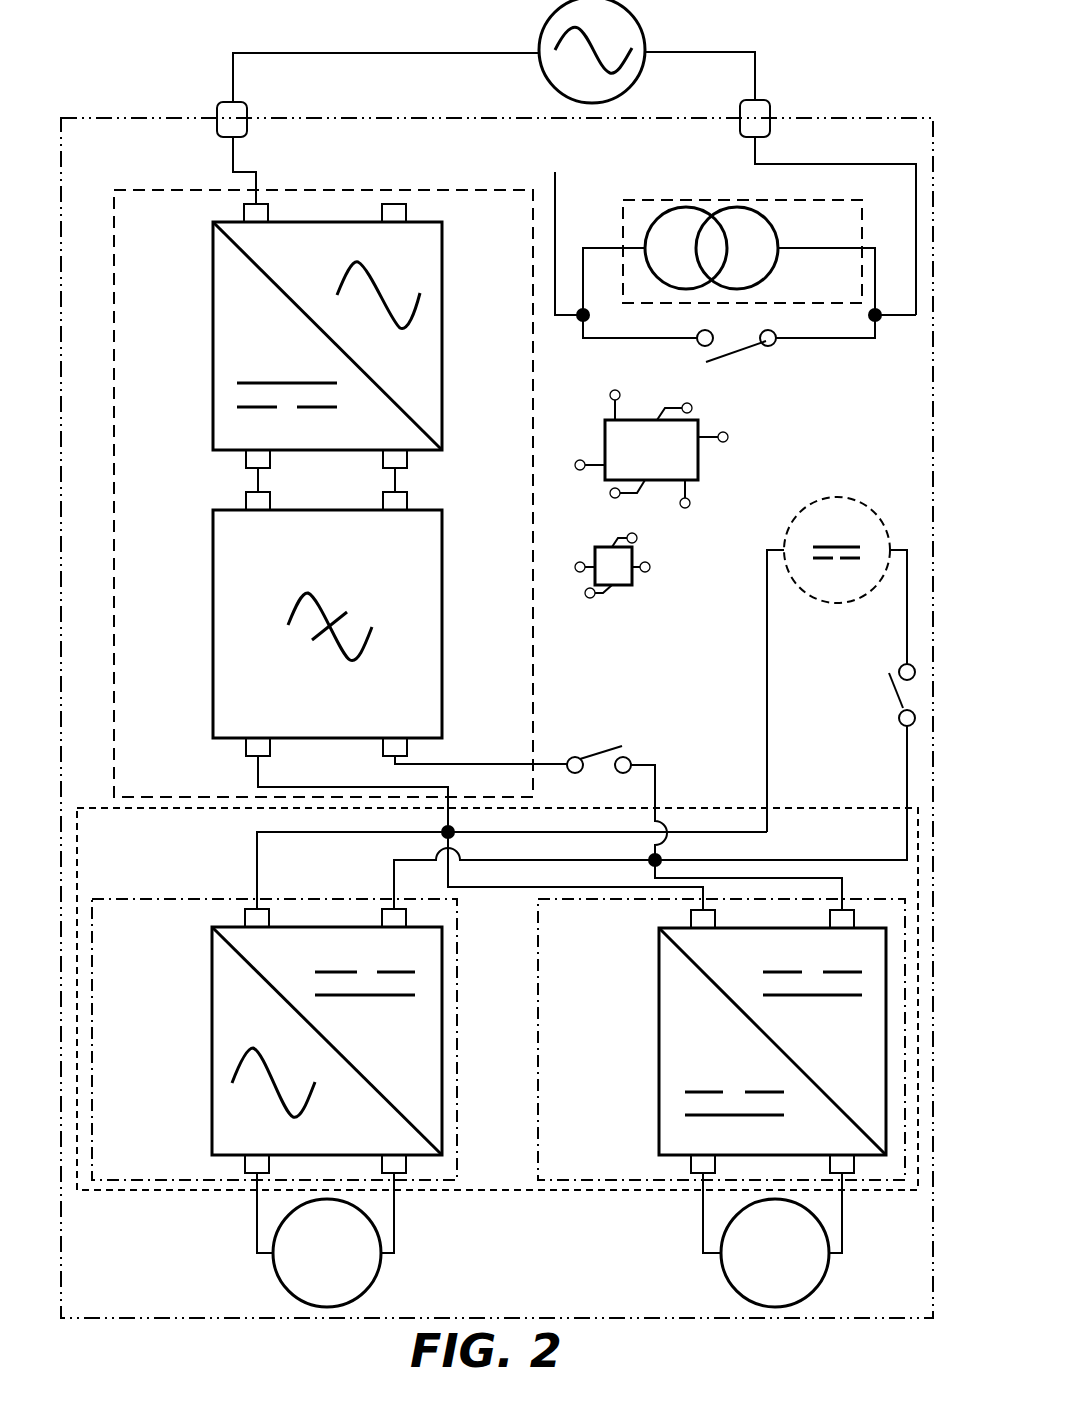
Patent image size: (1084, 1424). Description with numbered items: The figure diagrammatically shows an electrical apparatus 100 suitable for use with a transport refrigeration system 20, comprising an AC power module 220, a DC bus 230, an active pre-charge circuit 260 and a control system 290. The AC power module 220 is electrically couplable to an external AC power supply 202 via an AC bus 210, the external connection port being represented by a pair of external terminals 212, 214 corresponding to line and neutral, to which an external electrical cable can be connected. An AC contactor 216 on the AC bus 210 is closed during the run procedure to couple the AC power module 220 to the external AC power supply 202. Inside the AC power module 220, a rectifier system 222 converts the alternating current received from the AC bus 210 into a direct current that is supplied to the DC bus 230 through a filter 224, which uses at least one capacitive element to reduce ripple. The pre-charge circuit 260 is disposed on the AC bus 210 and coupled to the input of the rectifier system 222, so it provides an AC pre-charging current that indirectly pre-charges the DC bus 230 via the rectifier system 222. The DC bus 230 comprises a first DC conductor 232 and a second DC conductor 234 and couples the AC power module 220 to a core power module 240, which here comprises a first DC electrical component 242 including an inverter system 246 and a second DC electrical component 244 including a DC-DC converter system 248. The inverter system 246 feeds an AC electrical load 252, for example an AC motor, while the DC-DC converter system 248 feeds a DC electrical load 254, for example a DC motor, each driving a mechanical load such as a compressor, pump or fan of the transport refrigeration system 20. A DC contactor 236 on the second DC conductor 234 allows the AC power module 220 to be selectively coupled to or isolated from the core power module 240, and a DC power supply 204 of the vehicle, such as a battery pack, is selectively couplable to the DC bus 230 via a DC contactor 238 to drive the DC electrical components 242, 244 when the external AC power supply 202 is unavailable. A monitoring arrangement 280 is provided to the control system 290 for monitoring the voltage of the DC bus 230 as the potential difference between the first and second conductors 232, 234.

The transport refrigeration system 20 is at (877, 93).
The electrical apparatus 100 is at (116, 164).
The external AC power supply 202 is at (655, 0).
The DC power supply 204 is at (873, 503).
The AC bus 210 is at (271, 157).
The external terminal 212 is at (230, 112).
The external terminal 214 is at (770, 110).
The AC contactor 216 is at (735, 358).
The AC power module 220 is at (178, 231).
The rectifier system 222 is at (442, 327).
The filter 224 is at (213, 602).
The DC bus 230 is at (677, 729).
The first DC conductor 232 is at (260, 773).
The second DC conductor 234 is at (658, 787).
The DC contactor 236 is at (593, 753).
The DC contactor 238 is at (893, 690).
The core power module 240 is at (141, 854).
The first DC electrical component 242 is at (151, 932).
The second DC electrical component 244 is at (601, 934).
The inverter system 246 is at (212, 1040).
The DC-DC converter system 248 is at (659, 1035).
The AC electrical load 252 is at (377, 1278).
The DC electrical load 254 is at (825, 1278).
The active pre-charge circuit 260 is at (841, 231).
The monitoring arrangement 280 is at (612, 570).
The control system 290 is at (673, 466).